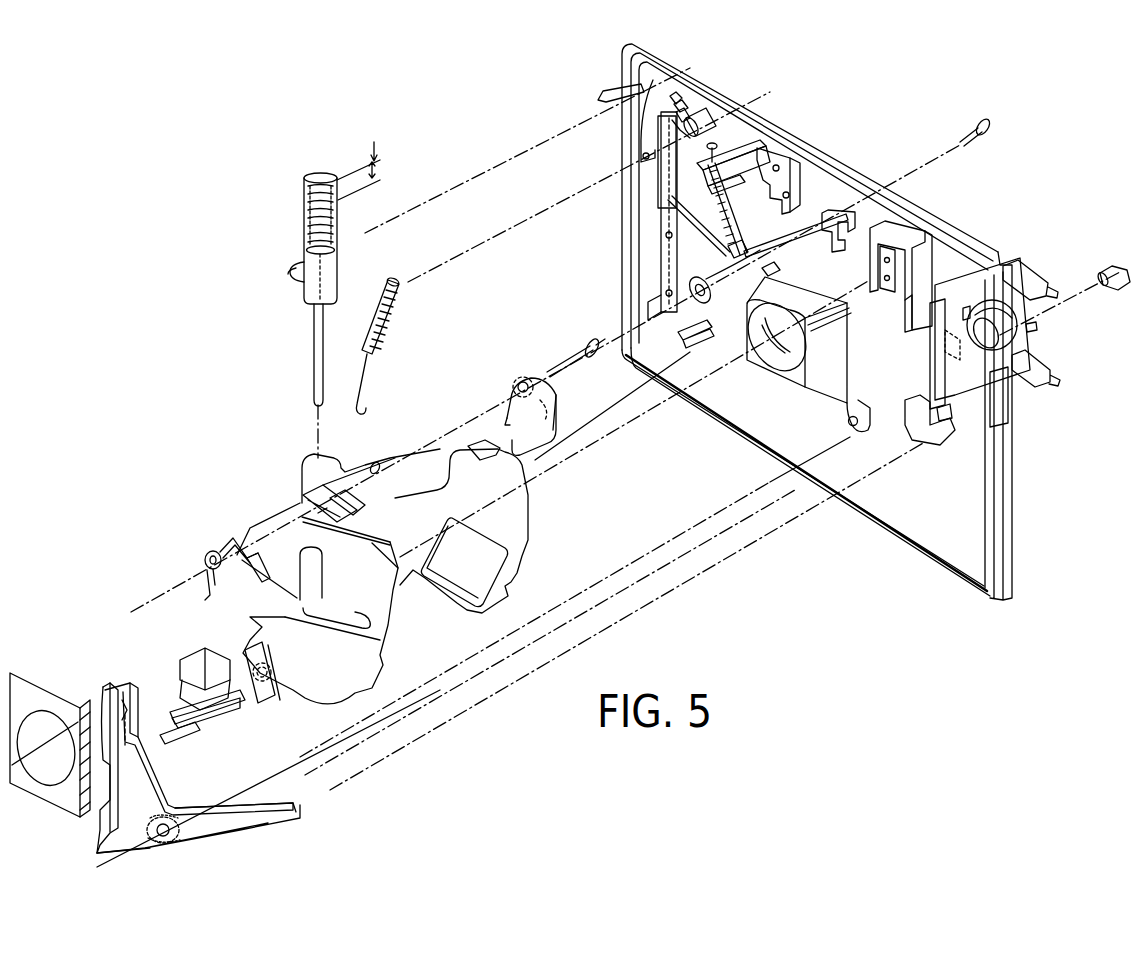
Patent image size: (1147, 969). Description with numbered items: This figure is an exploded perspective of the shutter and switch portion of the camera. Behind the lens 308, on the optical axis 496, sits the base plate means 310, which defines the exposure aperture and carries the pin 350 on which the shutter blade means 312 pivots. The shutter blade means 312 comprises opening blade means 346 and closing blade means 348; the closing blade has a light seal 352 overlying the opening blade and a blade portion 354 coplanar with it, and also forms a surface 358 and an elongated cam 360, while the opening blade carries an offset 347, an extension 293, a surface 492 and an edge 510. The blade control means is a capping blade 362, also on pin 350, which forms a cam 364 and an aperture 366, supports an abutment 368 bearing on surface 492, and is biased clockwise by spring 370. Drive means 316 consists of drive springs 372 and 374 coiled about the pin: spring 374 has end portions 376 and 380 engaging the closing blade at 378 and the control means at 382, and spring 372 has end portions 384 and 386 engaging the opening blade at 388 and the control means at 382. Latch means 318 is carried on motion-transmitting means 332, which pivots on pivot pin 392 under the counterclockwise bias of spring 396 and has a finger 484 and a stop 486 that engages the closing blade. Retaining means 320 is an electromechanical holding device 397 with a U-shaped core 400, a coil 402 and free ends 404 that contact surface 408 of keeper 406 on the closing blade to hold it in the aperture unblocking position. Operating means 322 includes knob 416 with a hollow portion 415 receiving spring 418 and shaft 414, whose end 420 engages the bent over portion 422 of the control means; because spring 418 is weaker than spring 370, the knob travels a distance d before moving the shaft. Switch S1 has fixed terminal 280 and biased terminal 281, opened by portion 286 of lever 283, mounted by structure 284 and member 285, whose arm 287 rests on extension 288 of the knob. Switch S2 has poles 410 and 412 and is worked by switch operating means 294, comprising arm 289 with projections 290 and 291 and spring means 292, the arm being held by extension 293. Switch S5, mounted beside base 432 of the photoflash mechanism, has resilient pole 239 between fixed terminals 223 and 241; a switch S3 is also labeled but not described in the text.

The fixed terminal 223 is at (932, 335).
The resilient pole 239 is at (916, 242).
The fixed terminal 241 is at (905, 313).
The fixed terminal 280 is at (712, 125).
The terminal 281 is at (688, 108).
The switch operating lever 283 is at (680, 100).
The structure 284 is at (680, 125).
The member 285 is at (672, 92).
The portion 286 is at (652, 113).
The arm 287 is at (615, 86).
The extension 288 is at (300, 265).
The arm 289 is at (762, 302).
The projection 290 is at (733, 245).
The projection 291 is at (760, 272).
The spring means 292 is at (712, 332).
The extension 293 is at (302, 498).
The switch operating means 294 is at (683, 271).
The lens 308 is at (45, 715).
The base plate means 310 is at (765, 403).
The shutter blade means 312 is at (246, 498).
The drive means 316 is at (330, 515).
The latch means 318 is at (130, 735).
The retaining means 320 is at (168, 672).
The operating means 322 is at (376, 214).
The motion-transmitting means 332 is at (170, 846).
The opening blade means 346 is at (320, 623).
The offset 347 is at (392, 588).
The closing blade means 348 is at (540, 400).
The pin 350 is at (975, 135).
The light seal 352 is at (348, 614).
The blade portion 354 is at (320, 695).
The surface 358 is at (368, 712).
The cam 360 is at (386, 660).
The capping blade 362 is at (469, 556).
The cam 364 is at (512, 582).
The aperture 366 is at (508, 550).
The abutment 368 is at (470, 455).
The spring 370 is at (400, 312).
The drive spring 372 is at (205, 558).
The drive spring 374 is at (520, 392).
The end portion 376 is at (530, 410).
The engagement point 378 is at (553, 430).
The end portion 380 is at (506, 408).
The engagement point 382 is at (352, 512).
The end portion 384 is at (268, 570).
The end portion 386 is at (220, 575).
The engagement point 388 is at (250, 540).
The pivot pin 392 is at (1118, 280).
The spring 396 is at (258, 800).
The releasable electromechanical holding device 397 is at (195, 735).
The U-shaped core 400 is at (225, 730).
The coil 402 is at (188, 655).
The free ends 404 is at (228, 712).
The keeper 406 is at (262, 640).
The surface 408 is at (258, 690).
The pole 410 is at (706, 258).
The pole 412 is at (790, 240).
The shaft 414 is at (323, 322).
The hollow portion 415 is at (342, 194).
The knob 416 is at (330, 275).
The spring 418 is at (308, 192).
The end 420 is at (313, 398).
The bent over portion 422 is at (356, 465).
The base 432 is at (1012, 268).
The finger 484 is at (912, 405).
The stop 486 is at (98, 840).
The surface 492 is at (388, 518).
The optical axis 496 is at (640, 415).
The edge 510 is at (393, 617).
The switch S1 is at (656, 162).
The switch S2 is at (744, 209).
The switch S3 is at (760, 150).
The switch S5 is at (927, 287).
The distance d is at (374, 140).